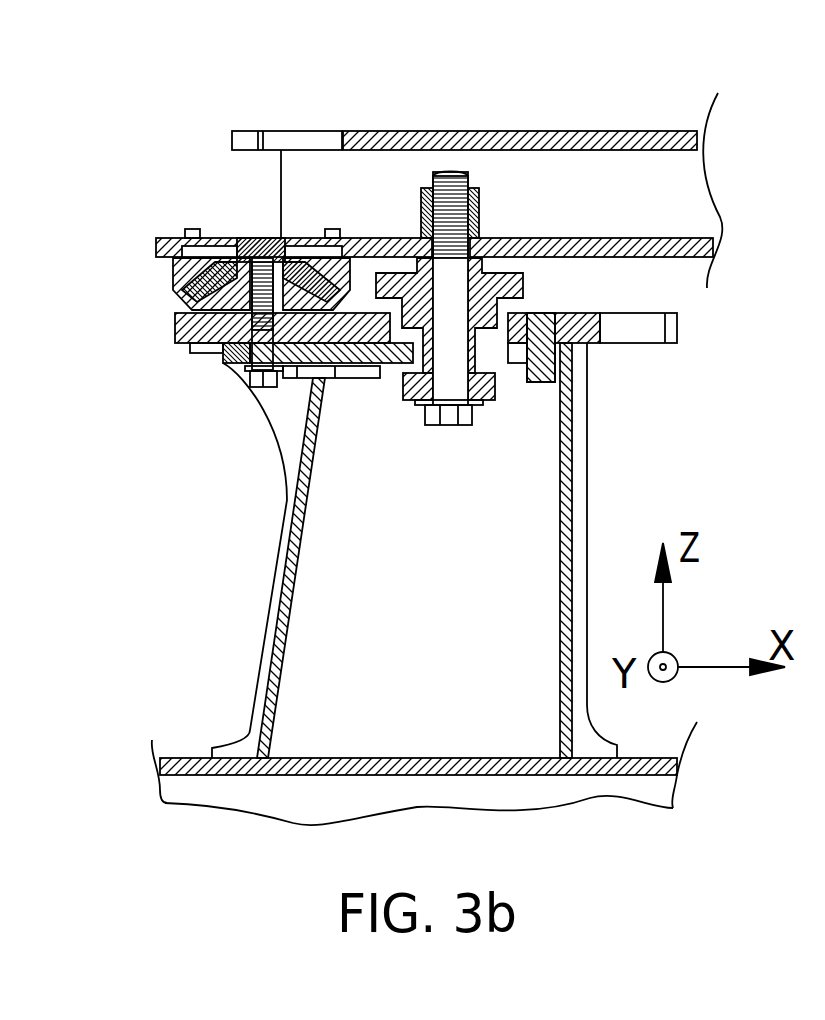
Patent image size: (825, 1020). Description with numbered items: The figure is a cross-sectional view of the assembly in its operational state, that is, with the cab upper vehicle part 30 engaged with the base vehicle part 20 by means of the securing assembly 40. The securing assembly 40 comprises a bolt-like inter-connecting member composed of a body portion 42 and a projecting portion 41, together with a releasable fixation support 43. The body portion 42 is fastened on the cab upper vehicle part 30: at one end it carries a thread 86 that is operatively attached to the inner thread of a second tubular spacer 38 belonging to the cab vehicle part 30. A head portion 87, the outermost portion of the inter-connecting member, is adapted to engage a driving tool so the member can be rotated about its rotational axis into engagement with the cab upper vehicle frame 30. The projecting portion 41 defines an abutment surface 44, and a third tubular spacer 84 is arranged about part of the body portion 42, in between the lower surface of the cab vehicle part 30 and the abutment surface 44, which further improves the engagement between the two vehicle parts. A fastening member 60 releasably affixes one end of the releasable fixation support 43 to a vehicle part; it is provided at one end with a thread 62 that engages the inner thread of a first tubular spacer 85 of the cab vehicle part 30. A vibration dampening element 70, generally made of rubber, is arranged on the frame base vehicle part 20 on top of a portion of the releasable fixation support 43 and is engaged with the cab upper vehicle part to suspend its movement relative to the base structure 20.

The base vehicle part 20 is at (175, 327).
The cab upper vehicle part 30 is at (305, 131).
The second tubular spacer 38 is at (421, 217).
The securing assembly 40 is at (440, 301).
The projecting portion 41 is at (482, 415).
The body portion 42 is at (408, 262).
The releasable fixation support 43 is at (195, 352).
The abutment surface 44 is at (415, 365).
The fastening member 60 is at (250, 380).
The thread 62 is at (250, 238).
The vibration dampening element 70 is at (173, 290).
The third tubular spacer 84 is at (523, 278).
The first tubular spacer 85 is at (236, 262).
The thread 86 is at (453, 172).
The head portion 87 is at (430, 418).